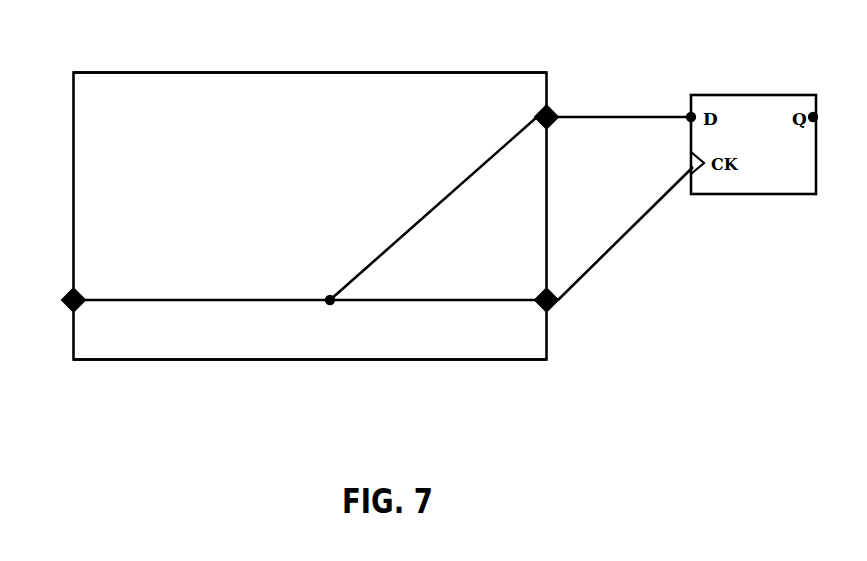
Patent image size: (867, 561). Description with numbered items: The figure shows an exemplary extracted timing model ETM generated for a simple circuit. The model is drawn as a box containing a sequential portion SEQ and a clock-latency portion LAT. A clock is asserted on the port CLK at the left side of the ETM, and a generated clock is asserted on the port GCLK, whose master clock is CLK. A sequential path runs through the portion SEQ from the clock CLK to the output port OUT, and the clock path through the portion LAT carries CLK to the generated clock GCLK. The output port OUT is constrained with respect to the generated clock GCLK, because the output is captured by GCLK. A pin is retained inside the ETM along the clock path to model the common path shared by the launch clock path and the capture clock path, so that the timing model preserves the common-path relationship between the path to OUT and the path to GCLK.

The extracted timing model ETM is at (310, 240).
The sequential path SEQ is at (310, 122).
The latency path LAT is at (310, 341).
The clock port CLK is at (284, 310).
The output port OUT is at (615, 105).
The generated clock port GCLK is at (614, 243).